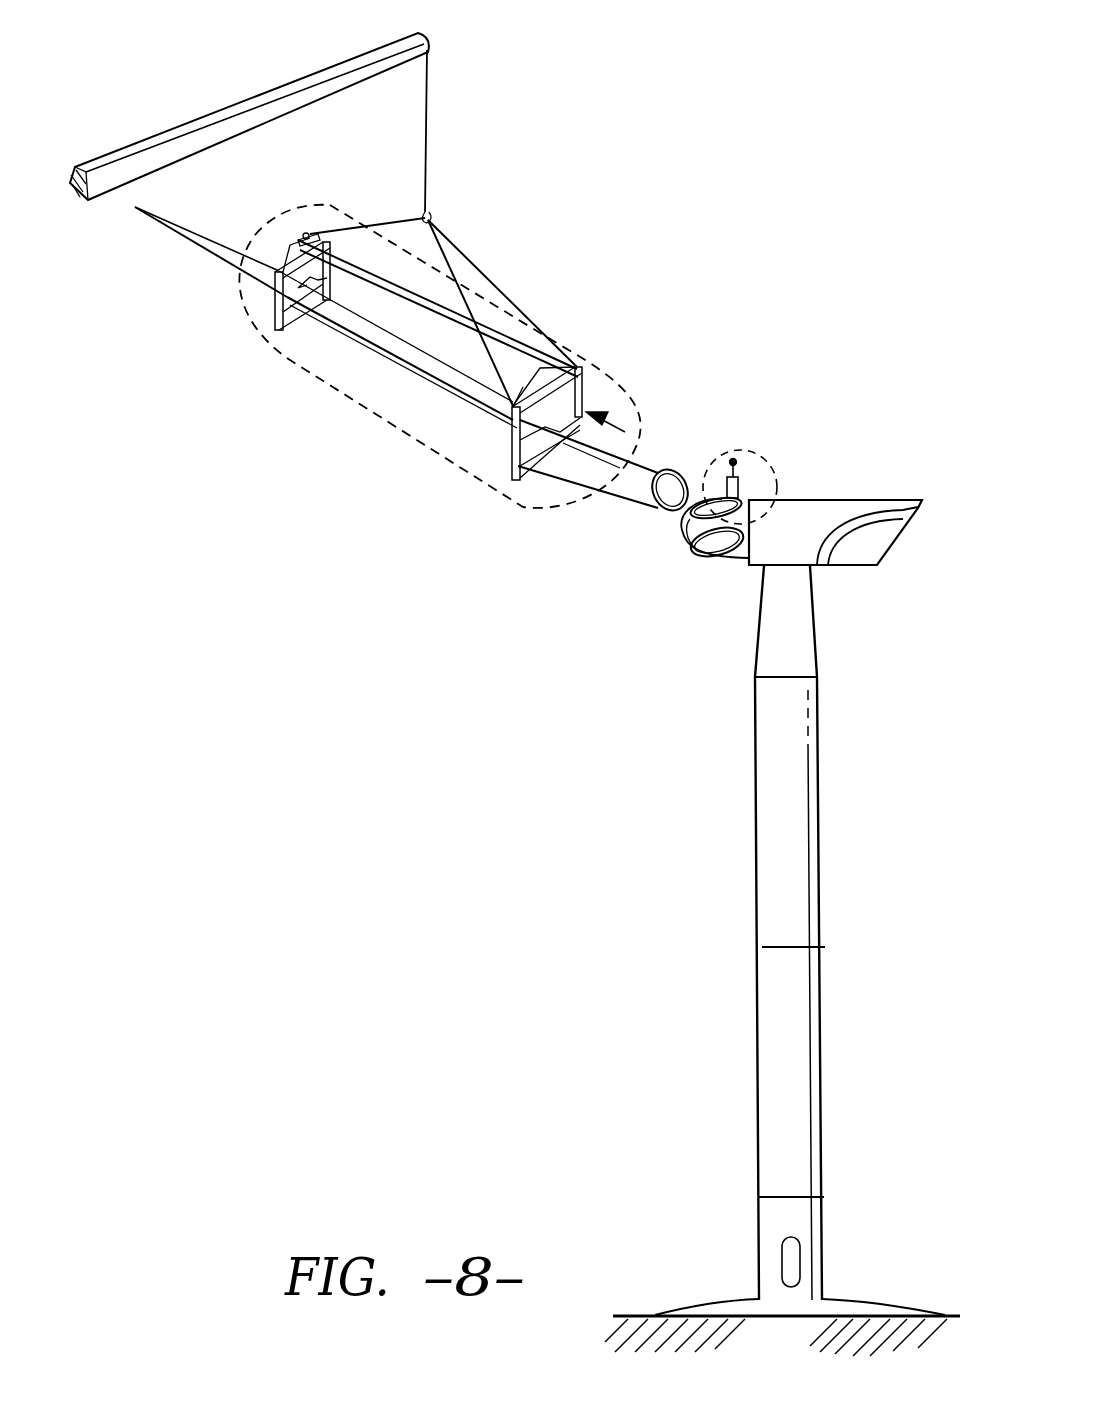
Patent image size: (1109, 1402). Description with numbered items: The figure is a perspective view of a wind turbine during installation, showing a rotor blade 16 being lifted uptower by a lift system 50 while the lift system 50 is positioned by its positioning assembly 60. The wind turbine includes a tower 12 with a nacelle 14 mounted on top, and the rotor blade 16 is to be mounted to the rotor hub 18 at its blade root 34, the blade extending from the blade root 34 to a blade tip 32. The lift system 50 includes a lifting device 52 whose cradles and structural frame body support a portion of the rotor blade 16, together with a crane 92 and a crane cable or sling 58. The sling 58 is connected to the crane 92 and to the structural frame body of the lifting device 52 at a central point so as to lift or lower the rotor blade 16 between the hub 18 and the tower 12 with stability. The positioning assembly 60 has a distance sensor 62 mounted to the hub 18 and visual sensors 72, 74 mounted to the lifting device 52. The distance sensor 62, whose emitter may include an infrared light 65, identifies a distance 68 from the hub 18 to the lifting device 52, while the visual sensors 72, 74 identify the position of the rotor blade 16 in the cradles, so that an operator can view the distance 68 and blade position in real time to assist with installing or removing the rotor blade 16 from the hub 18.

The tower 12 is at (825, 898).
The nacelle 14 is at (823, 508).
The rotor blade 16 is at (598, 480).
The rotor hub 18 is at (694, 507).
The blade tip 32 is at (132, 207).
The blade root 34 is at (658, 502).
The lift system 50 is at (745, 210).
The lifting device 52 is at (314, 222).
The crane cable or sling 58 is at (428, 150).
The positioning assembly 60 is at (549, 290).
The distance sensor 62 is at (733, 458).
The infrared light 65 is at (692, 550).
The distance 68 is at (692, 462).
The visual sensor 72 is at (292, 337).
The visual sensor 74 is at (328, 322).
The crane 92 is at (268, 92).